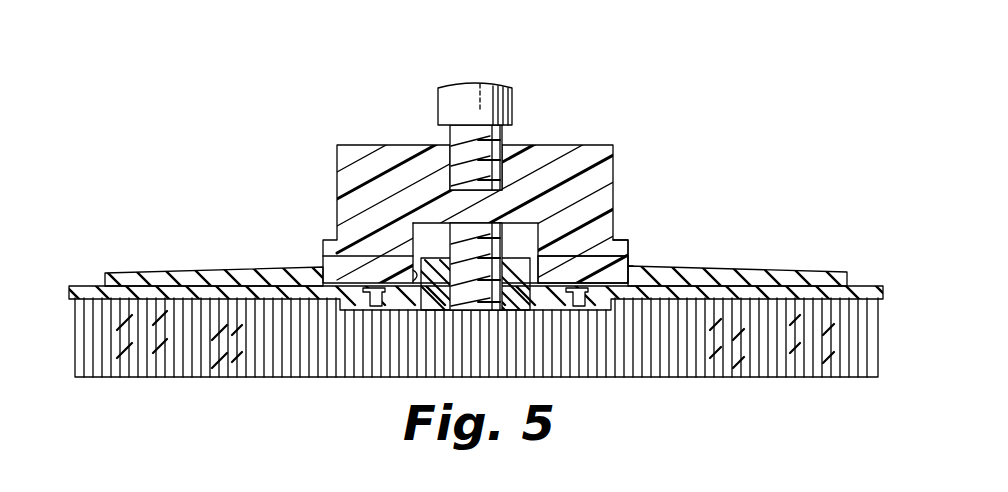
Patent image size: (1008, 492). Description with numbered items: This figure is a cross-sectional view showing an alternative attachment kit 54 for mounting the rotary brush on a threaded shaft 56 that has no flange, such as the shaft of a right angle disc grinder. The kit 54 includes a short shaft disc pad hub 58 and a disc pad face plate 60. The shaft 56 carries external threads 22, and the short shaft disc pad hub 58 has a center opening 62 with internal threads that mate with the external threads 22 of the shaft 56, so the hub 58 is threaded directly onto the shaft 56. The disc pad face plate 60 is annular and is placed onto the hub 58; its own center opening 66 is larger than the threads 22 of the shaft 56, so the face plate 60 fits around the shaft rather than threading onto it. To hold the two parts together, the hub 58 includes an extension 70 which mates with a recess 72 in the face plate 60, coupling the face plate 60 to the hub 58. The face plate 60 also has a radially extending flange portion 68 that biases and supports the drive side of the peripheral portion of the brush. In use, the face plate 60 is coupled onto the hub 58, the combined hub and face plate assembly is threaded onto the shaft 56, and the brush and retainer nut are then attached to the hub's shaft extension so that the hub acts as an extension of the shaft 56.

The external threads 22 is at (503, 143).
The kit 54 is at (710, 157).
The threaded shaft 56 is at (476, 84).
The short shaft disc pad hub 58 is at (589, 148).
The disc pad face plate 60 is at (823, 272).
The center opening 62 is at (451, 147).
The center opening 66 is at (412, 262).
The radially extending flange portion 68 is at (153, 274).
The extension 70 is at (598, 270).
The recess 72 is at (618, 268).